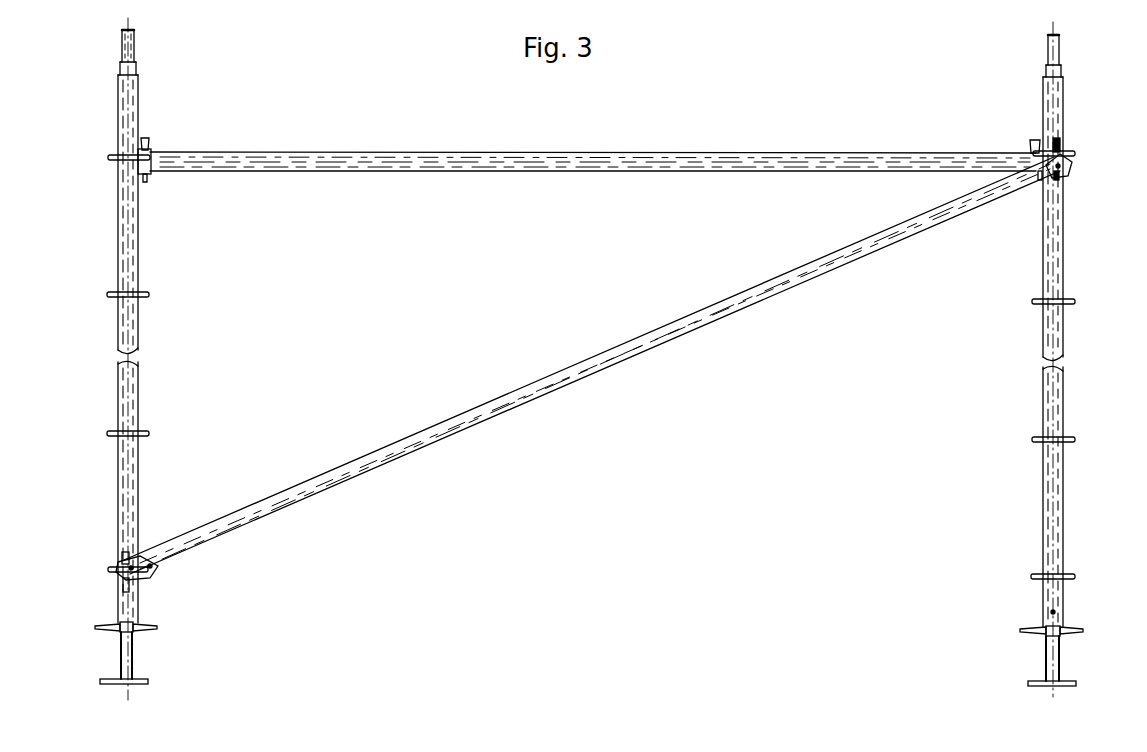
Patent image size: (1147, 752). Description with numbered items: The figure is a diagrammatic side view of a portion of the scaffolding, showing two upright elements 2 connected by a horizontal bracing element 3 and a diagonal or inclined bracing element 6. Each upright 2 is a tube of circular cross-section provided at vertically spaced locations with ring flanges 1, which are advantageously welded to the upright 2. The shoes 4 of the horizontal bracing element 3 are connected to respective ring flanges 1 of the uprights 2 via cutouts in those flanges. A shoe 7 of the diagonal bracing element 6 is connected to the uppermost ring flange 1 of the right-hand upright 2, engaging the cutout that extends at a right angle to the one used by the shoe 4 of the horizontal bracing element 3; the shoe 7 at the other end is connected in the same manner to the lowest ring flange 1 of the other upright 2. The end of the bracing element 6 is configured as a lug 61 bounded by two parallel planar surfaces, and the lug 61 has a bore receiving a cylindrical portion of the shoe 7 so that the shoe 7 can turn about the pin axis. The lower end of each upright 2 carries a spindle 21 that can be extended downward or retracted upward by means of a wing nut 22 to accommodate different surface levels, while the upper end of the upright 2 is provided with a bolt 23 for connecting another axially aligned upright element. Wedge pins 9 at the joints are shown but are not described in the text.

The ring flange 1 is at (108, 158).
The upright 2 is at (128, 488).
The horizontal bracing element 3 is at (440, 163).
The shoe 4 is at (147, 170).
The diagonal bracing element 6 is at (600, 360).
The shoe 7 is at (1066, 175).
The wedge pin 9 is at (150, 143).
The spindle 21 is at (132, 660).
The wing nut 22 is at (120, 628).
The bolt 23 is at (133, 50).
The lug 61 is at (155, 572).